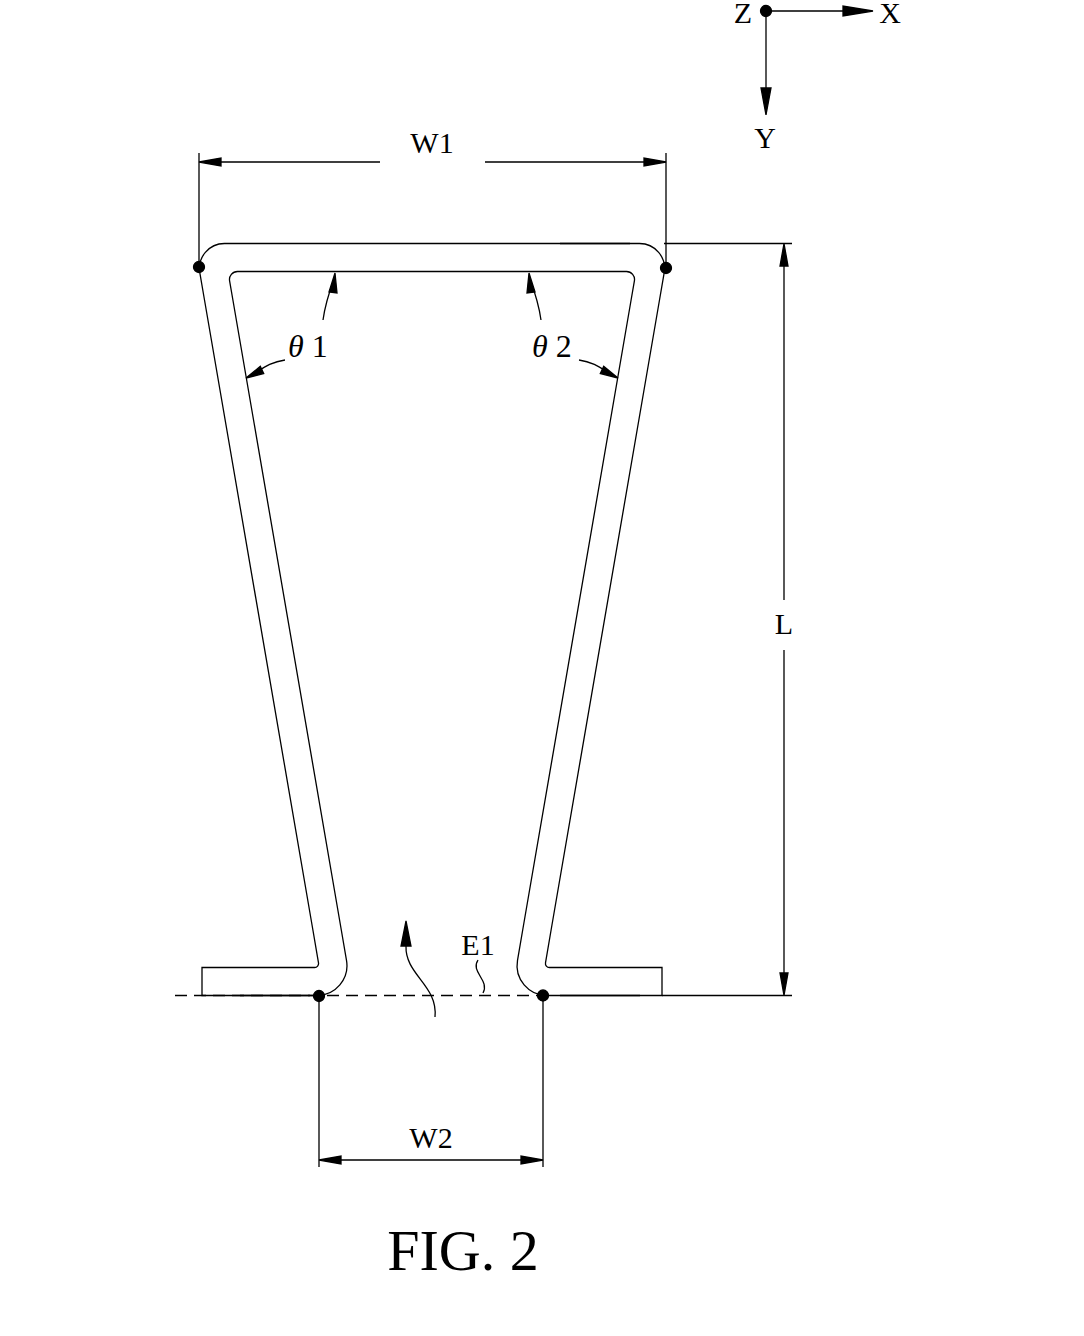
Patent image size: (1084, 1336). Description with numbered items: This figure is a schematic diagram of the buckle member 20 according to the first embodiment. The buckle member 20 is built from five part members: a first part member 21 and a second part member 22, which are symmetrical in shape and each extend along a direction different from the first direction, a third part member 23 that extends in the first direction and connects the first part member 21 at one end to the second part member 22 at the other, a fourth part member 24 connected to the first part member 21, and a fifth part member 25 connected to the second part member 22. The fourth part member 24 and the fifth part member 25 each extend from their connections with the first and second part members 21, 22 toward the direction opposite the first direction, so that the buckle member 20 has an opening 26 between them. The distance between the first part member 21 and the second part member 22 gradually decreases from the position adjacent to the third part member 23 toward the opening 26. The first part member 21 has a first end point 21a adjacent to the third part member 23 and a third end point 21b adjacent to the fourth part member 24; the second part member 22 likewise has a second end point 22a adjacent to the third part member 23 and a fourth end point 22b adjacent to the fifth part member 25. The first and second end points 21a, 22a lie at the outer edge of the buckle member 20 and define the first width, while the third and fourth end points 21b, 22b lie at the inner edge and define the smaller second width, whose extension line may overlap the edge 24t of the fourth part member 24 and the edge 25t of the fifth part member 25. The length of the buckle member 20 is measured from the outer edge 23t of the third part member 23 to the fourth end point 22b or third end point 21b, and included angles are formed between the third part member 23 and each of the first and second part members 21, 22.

The buckle member 20 is at (172, 544).
The first part member 21 is at (276, 660).
The first end point 21a is at (199, 267).
The third end point 21b is at (322, 999).
The second part member 22 is at (588, 660).
The second end point 22a is at (666, 268).
The fourth end point 22b is at (540, 998).
The third part member 23 is at (524, 250).
The outer edge 23t is at (594, 243).
The fourth part member 24 is at (233, 988).
The edge 24t is at (277, 996).
The fifth part member 25 is at (613, 988).
The edge 25t is at (654, 996).
The opening 26 is at (424, 991).